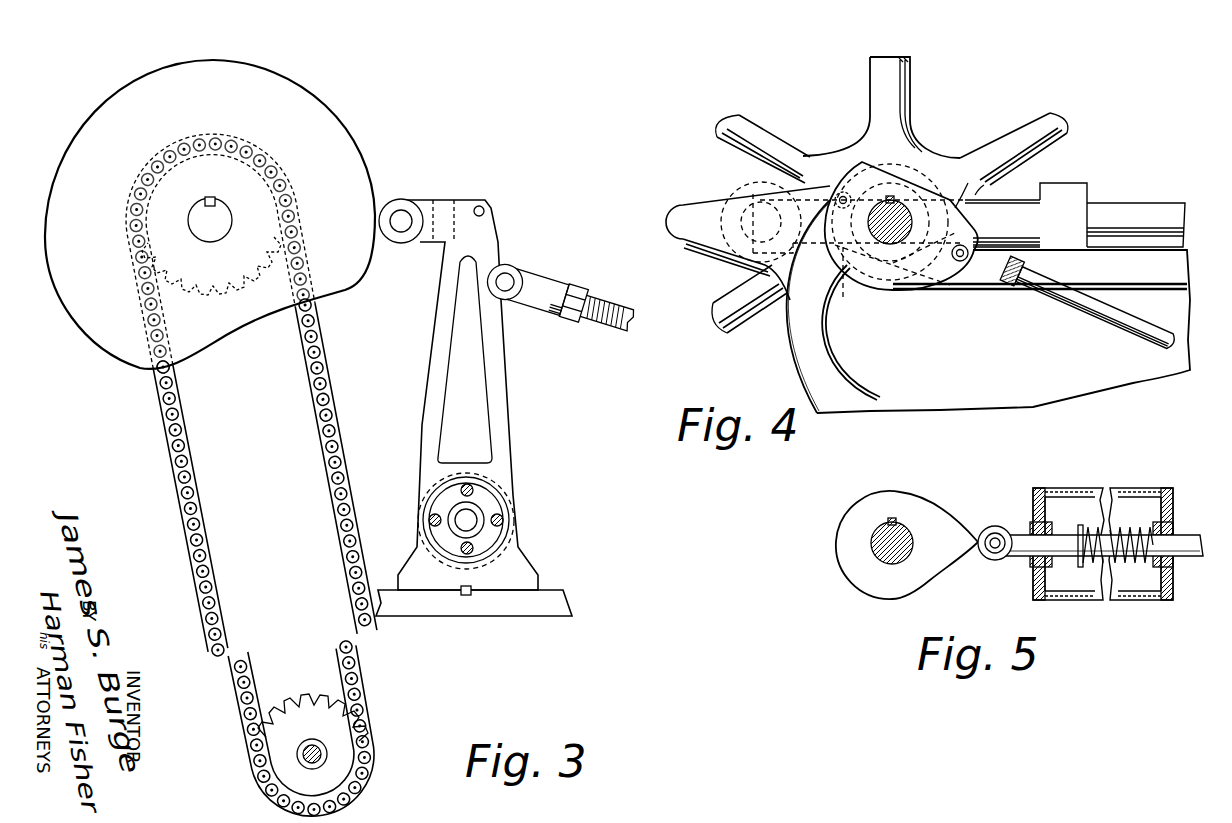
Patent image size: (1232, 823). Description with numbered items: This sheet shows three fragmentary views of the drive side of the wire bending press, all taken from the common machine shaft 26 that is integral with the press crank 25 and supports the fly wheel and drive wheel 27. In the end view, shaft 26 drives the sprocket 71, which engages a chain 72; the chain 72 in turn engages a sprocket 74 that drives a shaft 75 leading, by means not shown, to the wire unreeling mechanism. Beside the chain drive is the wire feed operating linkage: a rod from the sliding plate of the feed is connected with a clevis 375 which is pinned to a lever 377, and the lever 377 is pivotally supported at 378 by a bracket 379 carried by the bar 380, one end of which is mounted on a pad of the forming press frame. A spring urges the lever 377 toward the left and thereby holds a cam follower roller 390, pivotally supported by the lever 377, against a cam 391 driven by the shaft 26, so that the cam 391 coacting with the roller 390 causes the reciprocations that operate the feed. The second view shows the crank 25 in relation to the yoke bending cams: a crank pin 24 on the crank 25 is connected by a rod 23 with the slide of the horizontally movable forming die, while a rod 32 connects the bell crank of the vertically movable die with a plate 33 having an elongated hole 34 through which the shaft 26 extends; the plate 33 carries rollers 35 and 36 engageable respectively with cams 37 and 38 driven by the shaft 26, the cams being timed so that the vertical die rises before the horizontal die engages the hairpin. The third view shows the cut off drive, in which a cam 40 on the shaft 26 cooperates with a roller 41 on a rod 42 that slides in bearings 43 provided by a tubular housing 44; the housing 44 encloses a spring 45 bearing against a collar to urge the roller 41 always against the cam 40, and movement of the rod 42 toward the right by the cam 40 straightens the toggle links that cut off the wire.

In FIG. 3, the shaft 26 is at (188, 214).
In FIG. 4, the shaft 26 is at (900, 207).
In FIG. 5, the shaft 26 is at (870, 548).
In FIG. 3, the cam 391 is at (316, 103).
In FIG. 3, the sprocket 71 is at (212, 303).
In FIG. 3, the chain 72 is at (176, 465).
In FIG. 3, the sprocket 74 is at (296, 699).
In FIG. 3, the shaft 75 is at (315, 742).
In FIG. 3, the cam follower roller 390 is at (401, 244).
In FIG. 3, the clevis 375 is at (545, 292).
In FIG. 3, the lever 377 is at (496, 388).
In FIG. 3, the pivot 378 is at (475, 514).
In FIG. 3, the bracket 379 is at (515, 557).
In FIG. 3, the bar 380 is at (552, 603).
In FIG. 4, the fly wheel and drive wheel 27 is at (870, 74).
In FIG. 4, the crank pin 24 is at (747, 183).
In FIG. 4, the crank 25 is at (727, 195).
In FIG. 4, the roller 36 is at (845, 195).
In FIG. 4, the cam 37 is at (970, 184).
In FIG. 4, the rod 23 is at (1120, 203).
In FIG. 4, the roller 35 is at (973, 233).
In FIG. 4, the cam 38 is at (847, 270).
In FIG. 4, the elongated hole 34 is at (893, 265).
In FIG. 4, the plate 33 is at (950, 287).
In FIG. 4, the rod 32 is at (1110, 330).
In FIG. 5, the cam 40 is at (943, 515).
In FIG. 5, the roller 41 is at (1003, 530).
In FIG. 5, the rod 42 is at (1023, 548).
In FIG. 5, the bearings 43 is at (1052, 530).
In FIG. 5, the tubular housing 44 is at (1133, 487).
In FIG. 5, the spring 45 is at (1137, 533).